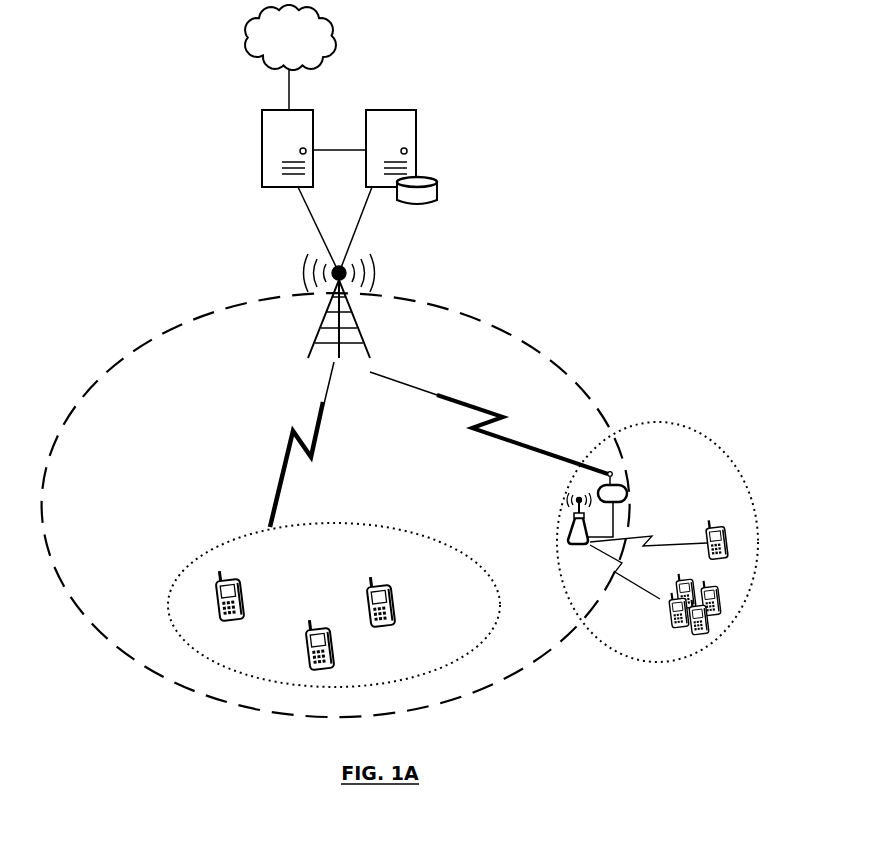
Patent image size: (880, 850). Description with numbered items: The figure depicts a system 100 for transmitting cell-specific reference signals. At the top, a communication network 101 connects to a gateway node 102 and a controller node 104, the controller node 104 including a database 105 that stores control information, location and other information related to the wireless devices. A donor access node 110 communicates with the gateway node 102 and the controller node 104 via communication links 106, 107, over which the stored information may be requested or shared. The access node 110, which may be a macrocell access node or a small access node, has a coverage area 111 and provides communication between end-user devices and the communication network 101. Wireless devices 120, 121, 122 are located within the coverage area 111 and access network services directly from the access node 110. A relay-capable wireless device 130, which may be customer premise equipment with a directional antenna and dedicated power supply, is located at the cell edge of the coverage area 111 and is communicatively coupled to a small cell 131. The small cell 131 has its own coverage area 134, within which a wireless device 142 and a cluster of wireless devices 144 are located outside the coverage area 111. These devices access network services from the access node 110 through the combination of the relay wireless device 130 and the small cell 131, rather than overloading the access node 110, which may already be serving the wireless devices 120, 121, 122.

The system 100 is at (383, 52).
The communication network 101 is at (277, 46).
The gateway node 102 is at (262, 125).
The controller node 104 is at (416, 125).
The database 105 is at (437, 180).
The communication link 106 is at (312, 214).
The communication link 107 is at (363, 214).
The donor access node 110 is at (318, 340).
The coverage area 111 is at (137, 348).
The wireless device 120 is at (243, 600).
The wireless device 121 is at (333, 653).
The wireless device 122 is at (383, 585).
The relay-capable wireless device 130 is at (627, 500).
The small cell 131 is at (597, 542).
The coverage area 134 is at (657, 553).
The wireless device 142 is at (750, 533).
The wireless devices 144 is at (719, 620).